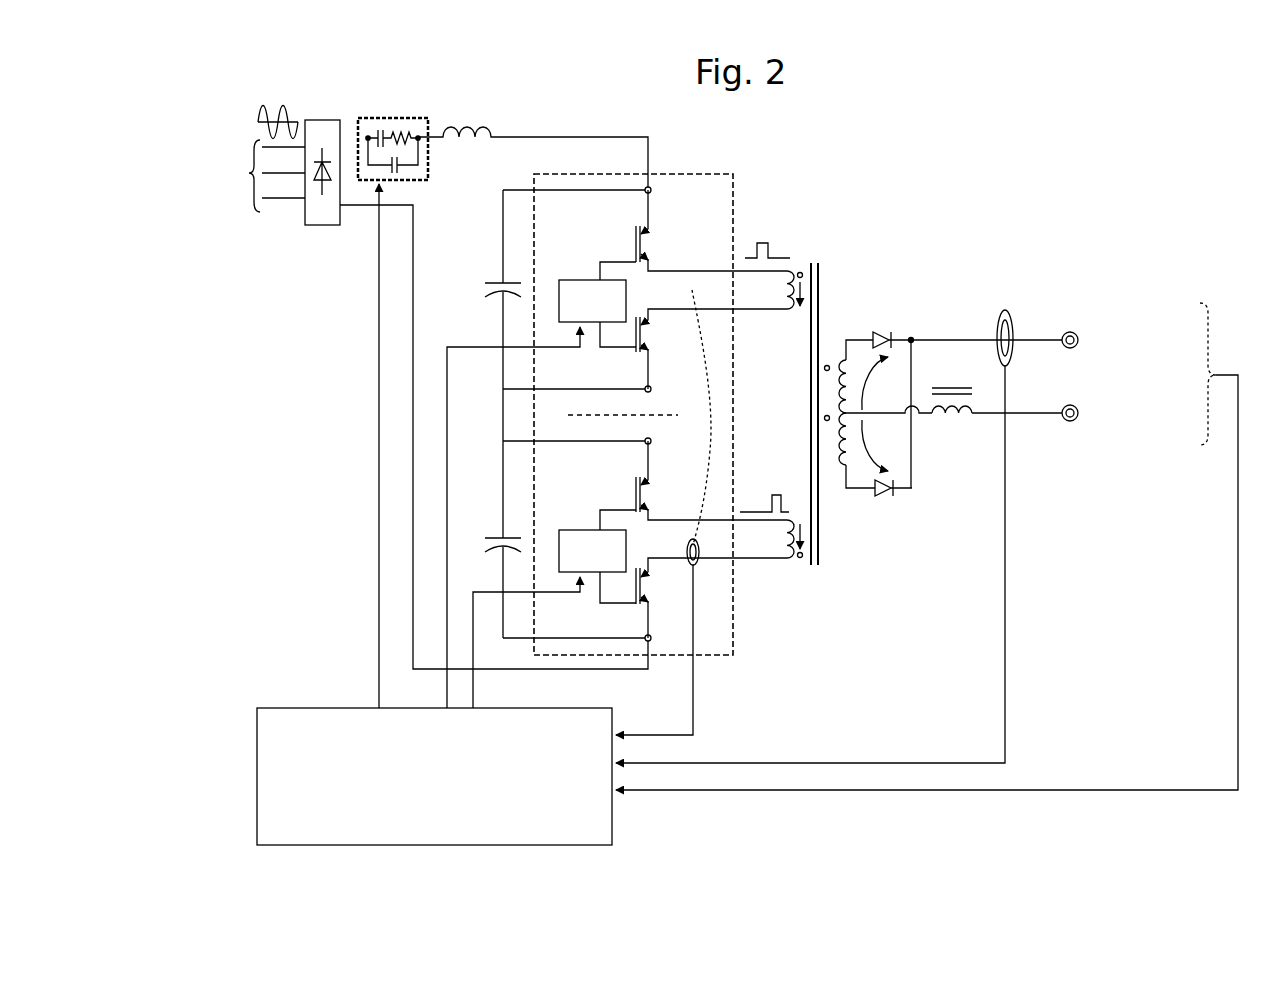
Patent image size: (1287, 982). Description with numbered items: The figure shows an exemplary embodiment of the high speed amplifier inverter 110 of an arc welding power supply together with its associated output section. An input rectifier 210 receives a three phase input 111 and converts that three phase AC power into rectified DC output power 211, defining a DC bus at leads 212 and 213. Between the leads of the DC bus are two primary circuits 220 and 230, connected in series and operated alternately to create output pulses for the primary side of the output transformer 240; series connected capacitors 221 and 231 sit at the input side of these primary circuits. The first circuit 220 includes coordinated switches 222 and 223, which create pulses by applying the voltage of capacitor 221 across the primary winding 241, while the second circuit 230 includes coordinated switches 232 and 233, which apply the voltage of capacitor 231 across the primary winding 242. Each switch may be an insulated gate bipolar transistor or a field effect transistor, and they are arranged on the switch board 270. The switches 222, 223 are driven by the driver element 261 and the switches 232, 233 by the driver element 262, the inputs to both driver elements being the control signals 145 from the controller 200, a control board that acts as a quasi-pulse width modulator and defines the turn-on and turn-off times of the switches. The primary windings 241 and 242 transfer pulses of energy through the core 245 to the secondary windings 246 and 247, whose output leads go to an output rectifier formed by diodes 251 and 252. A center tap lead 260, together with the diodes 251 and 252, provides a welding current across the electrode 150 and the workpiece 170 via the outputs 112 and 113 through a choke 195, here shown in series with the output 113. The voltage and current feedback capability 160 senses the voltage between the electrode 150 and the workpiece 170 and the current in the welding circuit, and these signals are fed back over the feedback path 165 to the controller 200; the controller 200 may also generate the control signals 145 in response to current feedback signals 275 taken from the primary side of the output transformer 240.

The high speed amplifier inverter 110 is at (1040, 140).
The three phase input 111 is at (240, 135).
The output 112 is at (963, 340).
The output 113 is at (985, 414).
The control signals 145 is at (473, 603).
The electrode 150 is at (1067, 331).
The voltage and current feedback capability 160 is at (1009, 300).
The feedback path 165 is at (897, 752).
The workpiece 170 is at (1070, 422).
The choke 195 is at (946, 388).
The controller 200 is at (292, 708).
The input rectifier 210 is at (312, 100).
The rectified DC output power 211 is at (480, 113).
The lead 212 is at (545, 137).
The lead 213 is at (413, 243).
The first primary circuit 220 is at (497, 191).
The capacitor 221 is at (495, 283).
The first switch 222 is at (646, 245).
The second switch 223 is at (648, 333).
The second primary circuit 230 is at (515, 439).
The capacitor 231 is at (492, 550).
The third switch 232 is at (646, 482).
The fourth switch 233 is at (648, 588).
The output transformer 240 is at (890, 240).
The primary winding 241 is at (790, 312).
The primary winding 242 is at (789, 560).
The core 245 is at (812, 262).
The secondary winding 246 is at (836, 360).
The secondary winding 247 is at (840, 466).
The diode 251 is at (883, 334).
The diode 252 is at (886, 497).
The center tap lead 260 is at (910, 445).
The driver element 261 is at (628, 302).
The driver element 262 is at (628, 553).
The switch board 270 is at (708, 174).
The current feedback signals 275 is at (677, 738).